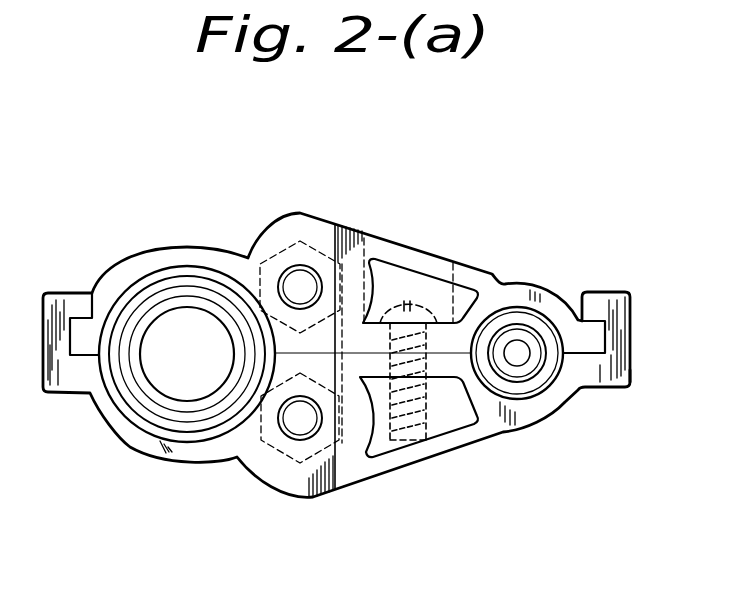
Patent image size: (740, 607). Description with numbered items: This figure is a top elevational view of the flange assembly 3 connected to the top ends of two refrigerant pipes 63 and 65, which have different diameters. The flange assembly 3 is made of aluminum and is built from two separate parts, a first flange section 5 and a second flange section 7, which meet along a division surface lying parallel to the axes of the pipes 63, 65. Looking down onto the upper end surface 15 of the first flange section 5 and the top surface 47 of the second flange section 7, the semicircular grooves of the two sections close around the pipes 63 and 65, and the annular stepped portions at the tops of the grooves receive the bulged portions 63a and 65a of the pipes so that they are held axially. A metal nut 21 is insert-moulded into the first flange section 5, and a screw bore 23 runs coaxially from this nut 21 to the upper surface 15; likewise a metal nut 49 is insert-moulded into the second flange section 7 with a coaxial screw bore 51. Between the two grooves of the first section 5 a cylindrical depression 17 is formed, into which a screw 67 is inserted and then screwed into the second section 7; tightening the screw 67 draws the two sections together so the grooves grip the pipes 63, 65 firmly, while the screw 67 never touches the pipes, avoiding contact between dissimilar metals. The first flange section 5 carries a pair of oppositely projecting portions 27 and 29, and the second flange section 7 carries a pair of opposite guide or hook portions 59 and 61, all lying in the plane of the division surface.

The flange assembly 3 is at (310, 203).
The first flange section 5 is at (357, 230).
The second flange section 7 is at (316, 499).
The upper end surface 15 is at (323, 232).
The cylindrical depression 17 is at (427, 284).
The nut 21 is at (273, 243).
The screw bore 23 is at (373, 259).
The projecting portion 27 is at (80, 333).
The projecting portion 29 is at (593, 340).
The top surface 47 is at (353, 463).
The nut 49 is at (297, 465).
The screw bore 51 is at (292, 428).
The guide or hook portion 59 is at (63, 372).
The guide or hook portion 61 is at (630, 366).
The pipe 63 is at (180, 303).
The bulged portion 63a is at (160, 442).
The pipe 65 is at (522, 330).
The bulged portion 65a is at (553, 395).
The screw 67 is at (424, 405).